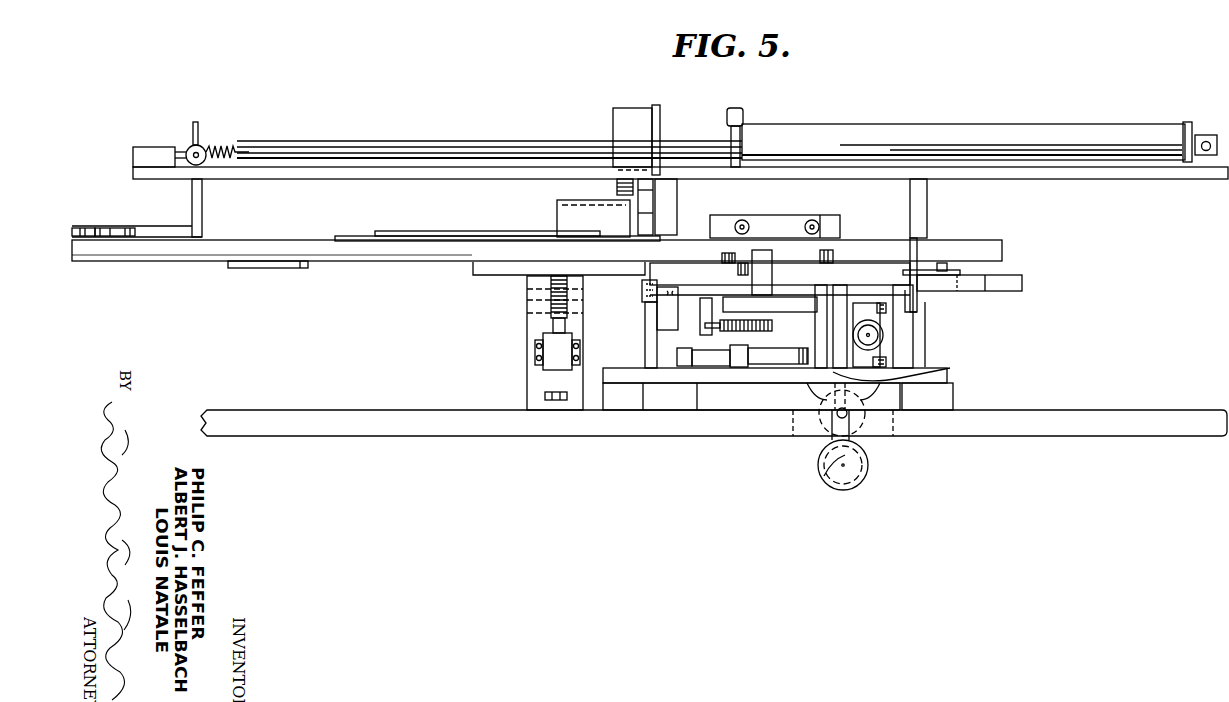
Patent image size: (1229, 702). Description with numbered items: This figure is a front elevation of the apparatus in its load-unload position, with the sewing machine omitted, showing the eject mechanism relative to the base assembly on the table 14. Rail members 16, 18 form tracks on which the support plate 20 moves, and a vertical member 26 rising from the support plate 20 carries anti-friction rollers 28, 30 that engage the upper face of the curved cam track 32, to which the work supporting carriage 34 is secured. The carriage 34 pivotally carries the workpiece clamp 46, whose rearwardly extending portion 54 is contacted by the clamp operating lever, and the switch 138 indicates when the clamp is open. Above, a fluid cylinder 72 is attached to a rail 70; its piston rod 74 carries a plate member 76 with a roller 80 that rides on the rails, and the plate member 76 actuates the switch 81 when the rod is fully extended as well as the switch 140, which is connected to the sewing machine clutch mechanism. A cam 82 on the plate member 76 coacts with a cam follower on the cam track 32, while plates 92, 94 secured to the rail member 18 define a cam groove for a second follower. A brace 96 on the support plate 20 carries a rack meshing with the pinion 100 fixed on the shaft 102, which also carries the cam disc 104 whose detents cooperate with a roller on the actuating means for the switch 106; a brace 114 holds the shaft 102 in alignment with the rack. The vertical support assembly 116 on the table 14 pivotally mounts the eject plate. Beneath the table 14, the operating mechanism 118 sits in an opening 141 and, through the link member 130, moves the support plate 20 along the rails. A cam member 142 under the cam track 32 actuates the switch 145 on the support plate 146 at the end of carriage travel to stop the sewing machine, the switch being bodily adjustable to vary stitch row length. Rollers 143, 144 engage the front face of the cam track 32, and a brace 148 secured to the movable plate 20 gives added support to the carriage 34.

The table 14 is at (1030, 418).
The rail member 16 is at (655, 322).
The rail member 18 is at (902, 335).
The support plate 20 is at (678, 293).
The vertical member 26 is at (776, 220).
The anti-friction roller 28 is at (742, 220).
The anti-friction roller 30 is at (820, 215).
The cam track 32 is at (310, 242).
The work supporting carriage 34 is at (437, 238).
The workpiece clamp 46 is at (416, 255).
The rearwardly extending portion 54 is at (560, 209).
The rail 70 is at (492, 170).
The fluid cylinder 72 is at (1000, 135).
The piston rod 74 is at (470, 145).
The plate member 76 is at (203, 188).
The roller 80 is at (192, 147).
The switch 81 is at (136, 148).
The cam 82 is at (141, 228).
The plate 92 is at (957, 288).
The plate 94 is at (1020, 270).
The brace 96 is at (718, 330).
The pinion 100 is at (765, 323).
The shaft 102 is at (750, 338).
The cam disc 104 is at (787, 357).
The switch 106 is at (714, 352).
The plate or brace 114 is at (770, 304).
The vertical support assembly 116 is at (537, 330).
The operating mechanism 118 is at (832, 467).
The link member 130 is at (953, 378).
The switch 138 is at (628, 116).
The switch 140 is at (744, 113).
The opening 141 is at (877, 438).
The cam member 142 is at (261, 268).
The roller 143 is at (727, 249).
The roller 144 is at (826, 252).
The switch 145 is at (528, 278).
The support plate 146 is at (512, 288).
The brace 148 is at (832, 272).